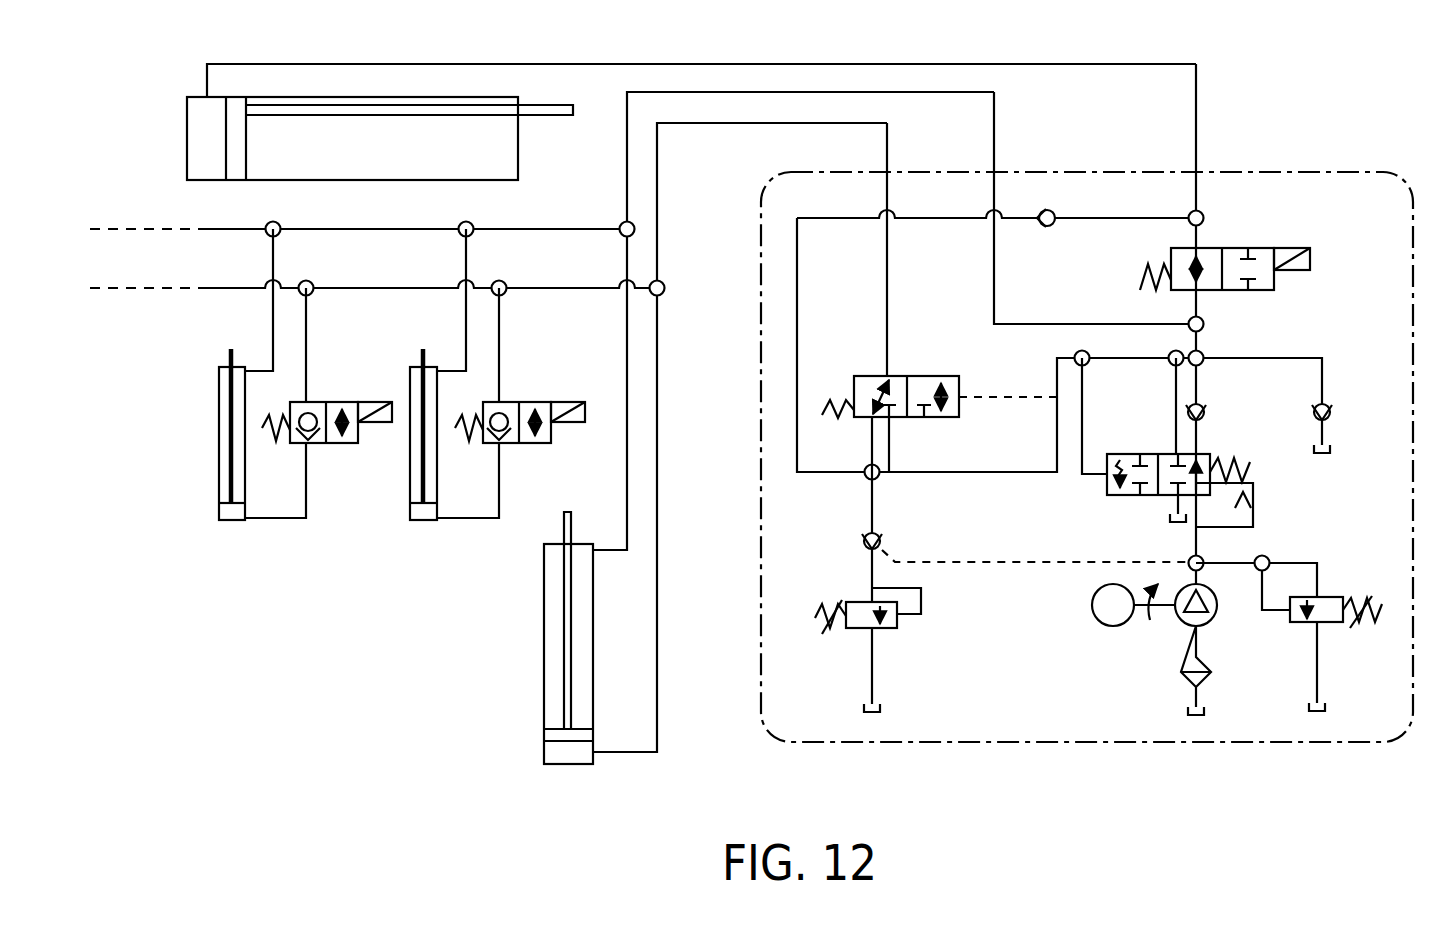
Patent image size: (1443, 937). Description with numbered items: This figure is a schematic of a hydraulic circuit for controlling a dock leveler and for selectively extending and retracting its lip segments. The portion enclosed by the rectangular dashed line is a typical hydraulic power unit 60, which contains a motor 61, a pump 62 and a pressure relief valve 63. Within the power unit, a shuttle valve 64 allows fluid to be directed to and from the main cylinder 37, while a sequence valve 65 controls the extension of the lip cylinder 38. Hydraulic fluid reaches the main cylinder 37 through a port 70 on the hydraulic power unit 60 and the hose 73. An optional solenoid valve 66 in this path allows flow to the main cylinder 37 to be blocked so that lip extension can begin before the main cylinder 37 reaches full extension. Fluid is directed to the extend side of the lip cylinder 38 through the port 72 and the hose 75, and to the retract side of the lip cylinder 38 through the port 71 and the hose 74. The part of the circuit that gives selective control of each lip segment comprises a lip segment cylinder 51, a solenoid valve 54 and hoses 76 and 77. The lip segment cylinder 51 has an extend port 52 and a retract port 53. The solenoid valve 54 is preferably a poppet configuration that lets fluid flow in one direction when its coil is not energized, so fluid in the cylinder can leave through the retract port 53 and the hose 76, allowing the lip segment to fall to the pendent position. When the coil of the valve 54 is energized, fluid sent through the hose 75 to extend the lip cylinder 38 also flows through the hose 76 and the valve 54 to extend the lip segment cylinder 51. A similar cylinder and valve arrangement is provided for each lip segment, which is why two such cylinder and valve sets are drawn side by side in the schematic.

The main cylinder 37 is at (518, 146).
The lip cylinder 38 is at (544, 677).
The lip segment cylinder 51 is at (412, 468).
The extend port 52 is at (446, 521).
The retract port 53 is at (448, 368).
The solenoid valve 54 is at (553, 430).
The hydraulic power unit 60 is at (1305, 172).
The motor 61 is at (1098, 624).
The pump 62 is at (1213, 614).
The pressure relief valve 63 is at (1325, 622).
The shuttle valve 64 is at (1202, 453).
The sequence valve 65 is at (924, 376).
The solenoid valve 66 is at (1276, 272).
The port 70 is at (1198, 172).
The port 71 is at (996, 170).
The port 72 is at (889, 170).
The hose 73 is at (1077, 64).
The hose 74 is at (626, 178).
The hose 75 is at (657, 172).
The hose 76 is at (500, 382).
The hose 77 is at (467, 250).